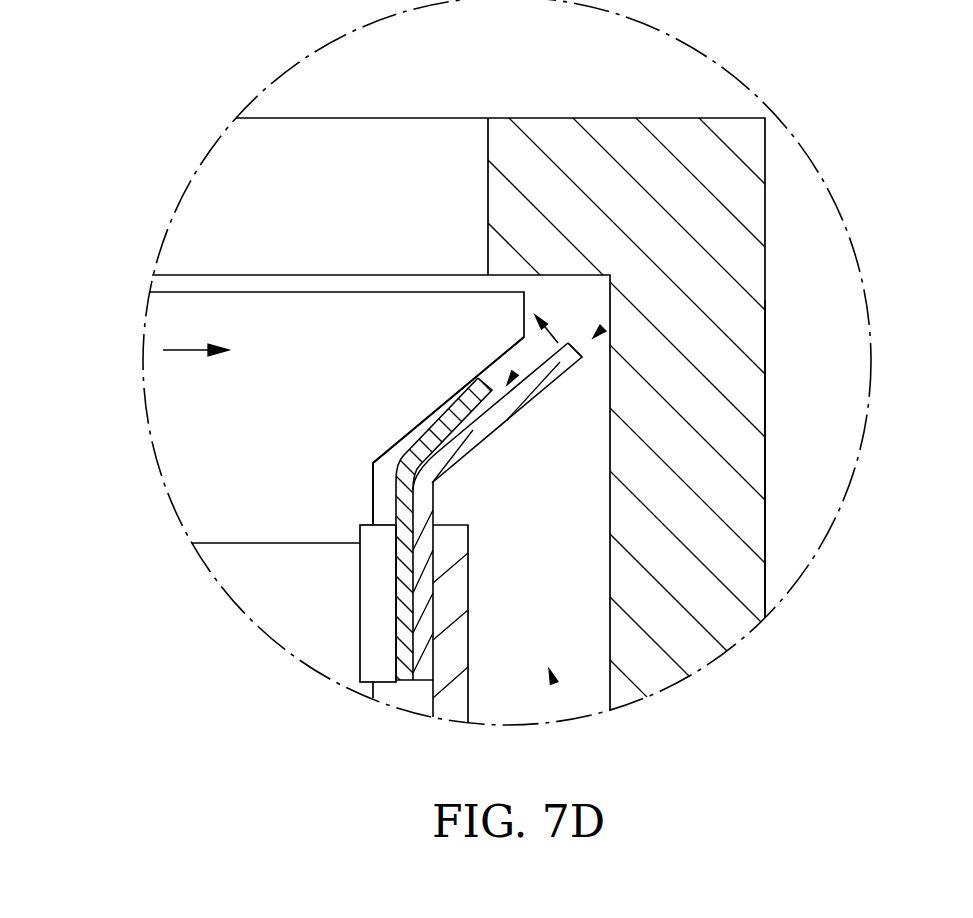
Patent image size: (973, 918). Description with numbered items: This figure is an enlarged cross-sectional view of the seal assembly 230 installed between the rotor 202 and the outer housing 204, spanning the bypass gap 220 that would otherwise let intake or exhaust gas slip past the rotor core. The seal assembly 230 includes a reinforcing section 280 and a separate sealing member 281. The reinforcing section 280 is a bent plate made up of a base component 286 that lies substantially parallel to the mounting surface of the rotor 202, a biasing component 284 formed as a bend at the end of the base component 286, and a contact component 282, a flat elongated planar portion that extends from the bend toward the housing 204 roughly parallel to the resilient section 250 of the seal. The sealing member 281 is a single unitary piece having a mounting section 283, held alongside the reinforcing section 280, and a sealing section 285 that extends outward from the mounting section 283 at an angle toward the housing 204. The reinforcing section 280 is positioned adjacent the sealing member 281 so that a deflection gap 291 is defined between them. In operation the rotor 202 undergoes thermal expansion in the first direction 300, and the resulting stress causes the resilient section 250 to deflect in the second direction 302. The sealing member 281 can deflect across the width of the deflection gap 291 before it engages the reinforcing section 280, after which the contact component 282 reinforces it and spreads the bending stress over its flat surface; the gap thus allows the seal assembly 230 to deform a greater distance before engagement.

The rotor 202 is at (338, 312).
The outer housing 204 is at (747, 522).
The bypass gap 220 is at (551, 676).
The seal assembly 230 is at (597, 334).
The resilient section 250 is at (561, 438).
The reinforcing section 280 is at (405, 530).
The sealing member 281 is at (506, 530).
The contact component 282 is at (435, 438).
The mounting section 283 is at (423, 530).
The biasing component 284 is at (376, 462).
The sealing section 285 is at (563, 365).
The base component 286 is at (405, 588).
The deflection gap 291 is at (509, 382).
The first direction 300 is at (180, 348).
The second direction 302 is at (560, 343).